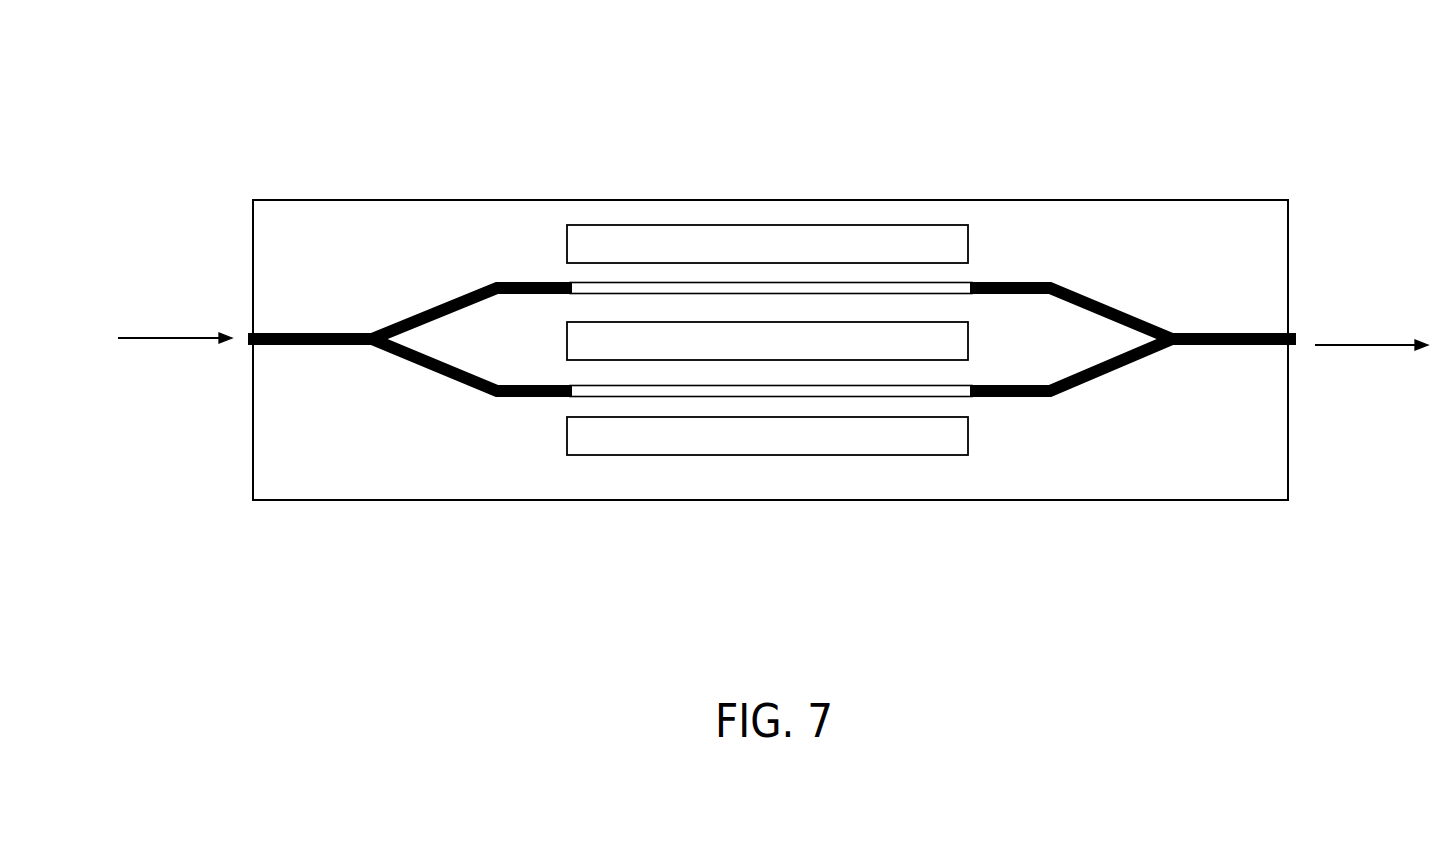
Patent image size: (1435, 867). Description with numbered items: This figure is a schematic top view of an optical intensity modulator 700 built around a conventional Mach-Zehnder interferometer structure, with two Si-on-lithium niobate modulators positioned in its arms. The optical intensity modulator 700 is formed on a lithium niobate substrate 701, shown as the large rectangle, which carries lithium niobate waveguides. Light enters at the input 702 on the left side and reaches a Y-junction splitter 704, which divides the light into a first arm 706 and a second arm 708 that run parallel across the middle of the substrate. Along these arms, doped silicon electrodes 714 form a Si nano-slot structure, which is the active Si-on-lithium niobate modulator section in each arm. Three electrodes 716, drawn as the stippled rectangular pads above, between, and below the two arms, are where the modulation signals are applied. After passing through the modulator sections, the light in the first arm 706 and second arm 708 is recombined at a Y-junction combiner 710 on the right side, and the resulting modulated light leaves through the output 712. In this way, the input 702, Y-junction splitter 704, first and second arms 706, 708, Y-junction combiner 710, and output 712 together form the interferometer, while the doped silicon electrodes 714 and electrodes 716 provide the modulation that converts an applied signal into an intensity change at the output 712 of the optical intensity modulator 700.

The optical intensity modulator 700 is at (916, 79).
The lithium niobate substrate 701 is at (388, 479).
The input 702 is at (285, 333).
The Y-junction splitter 704 is at (368, 345).
The first arm 706 is at (422, 310).
The second arm 708 is at (420, 371).
The Y-junction combiner 710 is at (1176, 345).
The output 712 is at (1236, 333).
The doped silicon electrodes 714 is at (907, 390).
The electrodes 716 is at (668, 440).